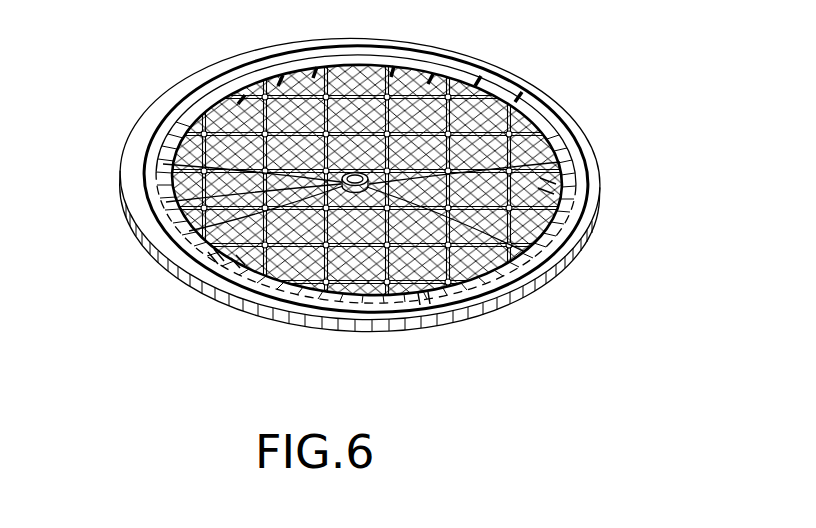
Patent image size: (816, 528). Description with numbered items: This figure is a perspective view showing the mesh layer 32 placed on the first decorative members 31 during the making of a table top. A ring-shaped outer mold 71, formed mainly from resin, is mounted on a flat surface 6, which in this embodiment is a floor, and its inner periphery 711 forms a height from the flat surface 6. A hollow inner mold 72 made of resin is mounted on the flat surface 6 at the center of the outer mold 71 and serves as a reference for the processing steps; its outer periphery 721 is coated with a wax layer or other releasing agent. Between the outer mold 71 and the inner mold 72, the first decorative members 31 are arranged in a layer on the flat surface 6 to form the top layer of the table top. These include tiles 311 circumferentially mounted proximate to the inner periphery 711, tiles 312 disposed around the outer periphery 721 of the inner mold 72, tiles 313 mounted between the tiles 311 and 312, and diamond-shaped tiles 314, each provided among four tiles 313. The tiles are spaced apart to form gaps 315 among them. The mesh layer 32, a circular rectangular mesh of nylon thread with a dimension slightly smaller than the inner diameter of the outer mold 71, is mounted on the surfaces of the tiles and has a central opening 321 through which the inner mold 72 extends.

The flat surface 6 is at (552, 57).
The outer mold 71 is at (557, 107).
The inner periphery 711 is at (477, 77).
The outer periphery 721 is at (167, 167).
The first decorative members 31 is at (300, 67).
The tiles 311 is at (230, 97).
The mesh layer 32 is at (160, 165).
The central opening 321 is at (163, 202).
The gaps 315 is at (187, 230).
The tiles 312 is at (215, 257).
The diamond-shaped tiles 314 is at (237, 260).
The tiles 313 is at (423, 293).
The inner mold 72 is at (543, 183).